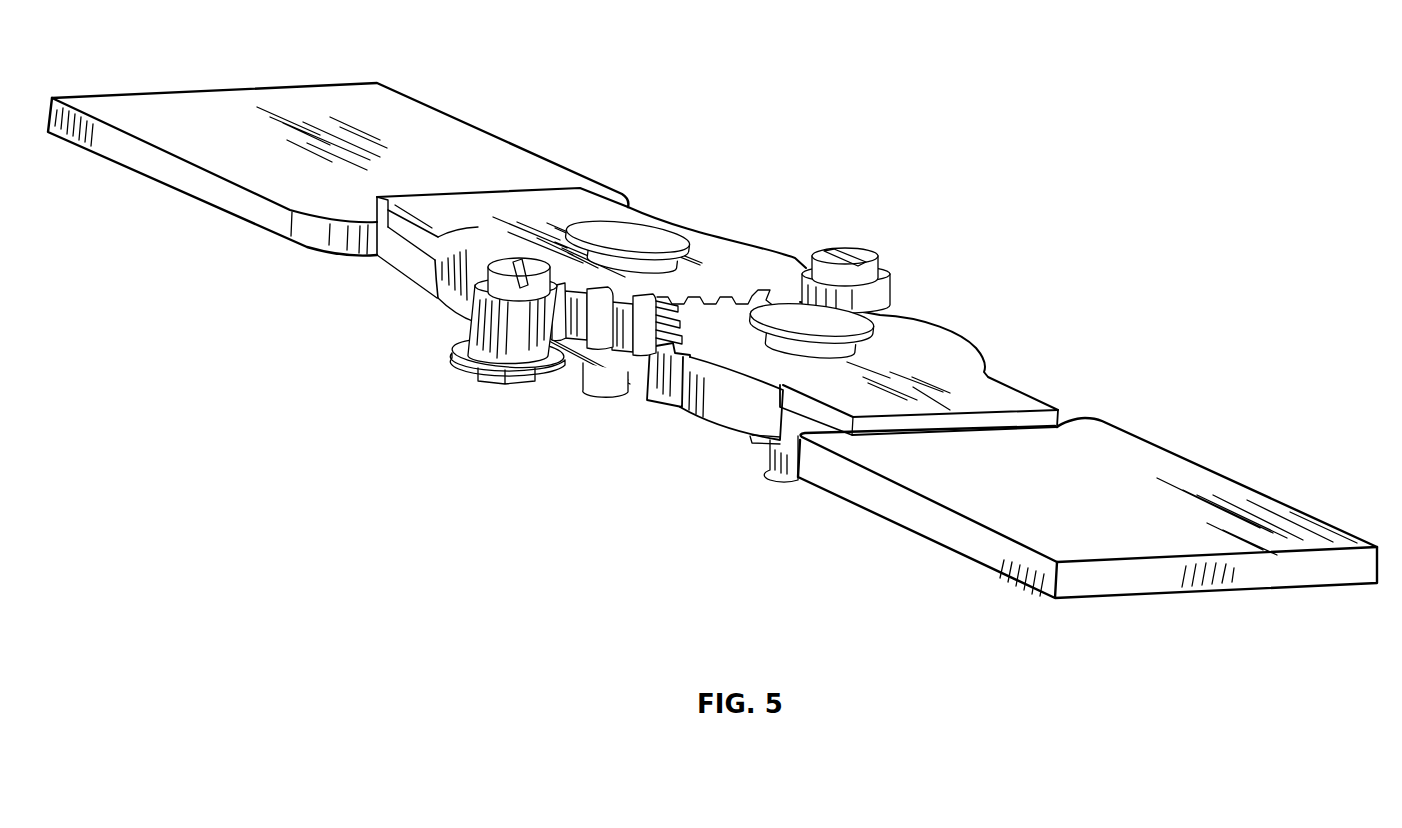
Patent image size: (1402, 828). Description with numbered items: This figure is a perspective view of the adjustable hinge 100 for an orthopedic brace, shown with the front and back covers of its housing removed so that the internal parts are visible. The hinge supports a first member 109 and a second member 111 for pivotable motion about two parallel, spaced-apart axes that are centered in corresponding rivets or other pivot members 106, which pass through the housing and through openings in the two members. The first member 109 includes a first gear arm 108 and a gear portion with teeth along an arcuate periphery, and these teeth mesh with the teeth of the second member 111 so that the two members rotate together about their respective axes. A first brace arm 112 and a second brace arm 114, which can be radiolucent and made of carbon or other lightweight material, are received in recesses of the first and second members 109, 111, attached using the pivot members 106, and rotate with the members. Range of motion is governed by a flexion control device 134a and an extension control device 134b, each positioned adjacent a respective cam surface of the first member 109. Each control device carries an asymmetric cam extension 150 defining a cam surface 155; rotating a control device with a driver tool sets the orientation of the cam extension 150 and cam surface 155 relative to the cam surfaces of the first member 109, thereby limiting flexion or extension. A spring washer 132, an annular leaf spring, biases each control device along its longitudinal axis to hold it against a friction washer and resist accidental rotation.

The adjustable hinge 100 is at (1030, 106).
The pivot member 106 is at (638, 245).
The first gear arm 108 is at (533, 210).
The first member 109 is at (470, 235).
The second member 111 is at (930, 353).
The first brace arm 112 is at (430, 130).
The second brace arm 114 is at (1120, 455).
The spring washer 132 is at (452, 352).
The flexion control device 134a is at (484, 285).
The extension control device 134b is at (866, 251).
The cam extension 150 is at (481, 340).
The cam surface 155 is at (458, 340).